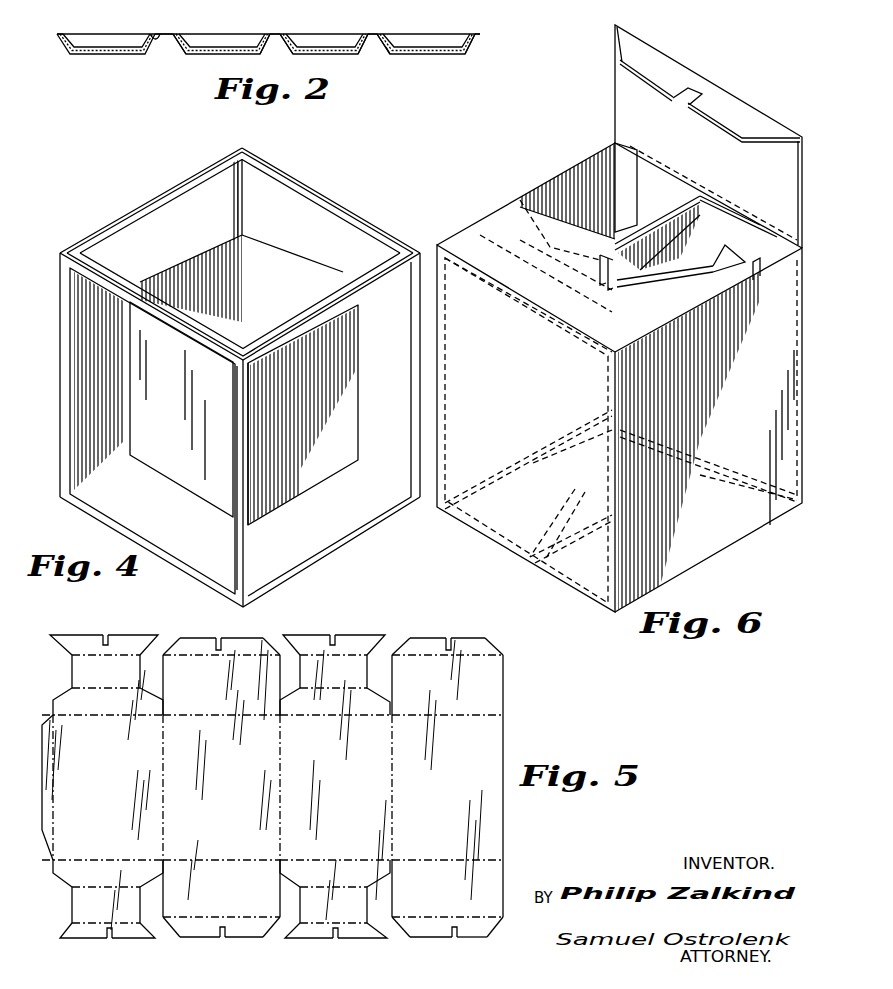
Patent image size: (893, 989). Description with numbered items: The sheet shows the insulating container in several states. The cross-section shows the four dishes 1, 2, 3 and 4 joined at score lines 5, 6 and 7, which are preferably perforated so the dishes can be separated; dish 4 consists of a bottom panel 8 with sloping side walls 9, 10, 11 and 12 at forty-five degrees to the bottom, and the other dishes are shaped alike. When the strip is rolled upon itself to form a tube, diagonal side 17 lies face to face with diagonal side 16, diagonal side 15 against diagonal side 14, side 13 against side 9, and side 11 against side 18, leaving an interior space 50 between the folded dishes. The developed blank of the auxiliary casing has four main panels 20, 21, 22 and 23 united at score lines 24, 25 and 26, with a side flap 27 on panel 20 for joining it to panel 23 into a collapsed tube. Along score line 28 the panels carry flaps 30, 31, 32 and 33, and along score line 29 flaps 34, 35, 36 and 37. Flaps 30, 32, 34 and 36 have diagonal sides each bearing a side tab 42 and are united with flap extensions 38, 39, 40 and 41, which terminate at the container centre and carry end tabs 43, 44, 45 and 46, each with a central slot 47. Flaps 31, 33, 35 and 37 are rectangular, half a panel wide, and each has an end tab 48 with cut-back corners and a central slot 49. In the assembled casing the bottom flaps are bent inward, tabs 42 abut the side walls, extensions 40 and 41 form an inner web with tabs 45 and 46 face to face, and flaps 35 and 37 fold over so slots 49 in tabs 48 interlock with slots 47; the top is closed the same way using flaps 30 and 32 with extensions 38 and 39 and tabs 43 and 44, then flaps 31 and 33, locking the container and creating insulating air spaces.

In FIG. 2, the dish 1 is at (112, 34).
In FIG. 4, the dish 1 is at (318, 194).
In FIG. 2, the dish 2 is at (225, 28).
In FIG. 4, the dish 2 is at (170, 192).
In FIG. 2, the dish 3 is at (330, 28).
In FIG. 4, the dish 3 is at (210, 293).
In FIG. 2, the dish 4 is at (422, 34).
In FIG. 4, the dish 4 is at (292, 328).
In FIG. 2, the score line 5 is at (165, 34).
In FIG. 2, the score line 6 is at (277, 34).
In FIG. 2, the score line 7 is at (373, 34).
In FIG. 2, the bottom panel 8 is at (446, 52).
In FIG. 4, the bottom panel 8 is at (303, 415).
In FIG. 2, the sloping side wall 9 is at (381, 52).
In FIG. 4, the sloping side wall 9 is at (258, 464).
In FIG. 2, the sloping side wall 10 is at (398, 46).
In FIG. 4, the sloping side wall 10 is at (360, 314).
In FIG. 2, the sloping side wall 11 is at (478, 37).
In FIG. 4, the sloping side wall 11 is at (366, 380).
In FIG. 4, the sloping side wall 12 is at (364, 522).
In FIG. 2, the diagonal side 13 is at (362, 46).
In FIG. 2, the diagonal side 14 is at (291, 44).
In FIG. 4, the diagonal side 14 is at (86, 372).
In FIG. 2, the diagonal side 15 is at (263, 45).
In FIG. 2, the diagonal side 16 is at (181, 44).
In FIG. 2, the diagonal side 17 is at (154, 42).
In FIG. 2, the diagonal side 18 is at (92, 27).
In FIG. 5, the main panel 20 is at (102, 746).
In FIG. 6, the main panel 21 is at (526, 428).
In FIG. 5, the main panel 21 is at (221, 746).
In FIG. 6, the main panel 22 is at (708, 430).
In FIG. 5, the main panel 22 is at (336, 746).
In FIG. 5, the main panel 23 is at (447, 787).
In FIG. 5, the score line 24 is at (165, 813).
In FIG. 5, the score line 25 is at (282, 813).
In FIG. 5, the score line 26 is at (394, 813).
In FIG. 5, the side flap 27 is at (44, 835).
In FIG. 5, the score line 28 is at (505, 715).
In FIG. 5, the score line 29 is at (505, 860).
In FIG. 6, the flap 30 is at (576, 170).
In FIG. 5, the flap 30 is at (106, 699).
In FIG. 6, the flap 31 is at (535, 293).
In FIG. 5, the flap 31 is at (221, 676).
In FIG. 5, the flap 32 is at (333, 699).
In FIG. 5, the flap 33 is at (447, 676).
In FIG. 5, the flap 34 is at (102, 869).
In FIG. 5, the flap 35 is at (221, 898).
In FIG. 5, the flap 36 is at (336, 869).
In FIG. 6, the flap 37 is at (615, 100).
In FIG. 5, the flap 37 is at (447, 898).
In FIG. 6, the flap extension 38 is at (636, 224).
In FIG. 5, the flap extension 38 is at (106, 671).
In FIG. 6, the flap extension 39 is at (676, 279).
In FIG. 5, the flap extension 39 is at (333, 671).
In FIG. 5, the flap extension 40 is at (106, 905).
In FIG. 5, the flap extension 41 is at (333, 905).
In FIG. 6, the side tab 42 is at (633, 158).
In FIG. 5, the side tab 42 is at (57, 690).
In FIG. 6, the end tab 43 is at (684, 198).
In FIG. 5, the end tab 43 is at (91, 623).
In FIG. 6, the end tab 44 is at (706, 216).
In FIG. 5, the end tab 44 is at (306, 634).
In FIG. 6, the end tab 45 is at (548, 520).
In FIG. 5, the end tab 45 is at (68, 938).
In FIG. 6, the end tab 46 is at (565, 500).
In FIG. 5, the end tab 46 is at (310, 938).
In FIG. 6, the central slot 47 is at (604, 256).
In FIG. 5, the central slot 47 is at (107, 635).
In FIG. 6, the end tab 48 is at (730, 106).
In FIG. 5, the end tab 48 is at (191, 641).
In FIG. 6, the central slot 49 is at (690, 94).
In FIG. 5, the central slot 49 is at (222, 641).
In FIG. 4, the interior space 50 is at (229, 240).